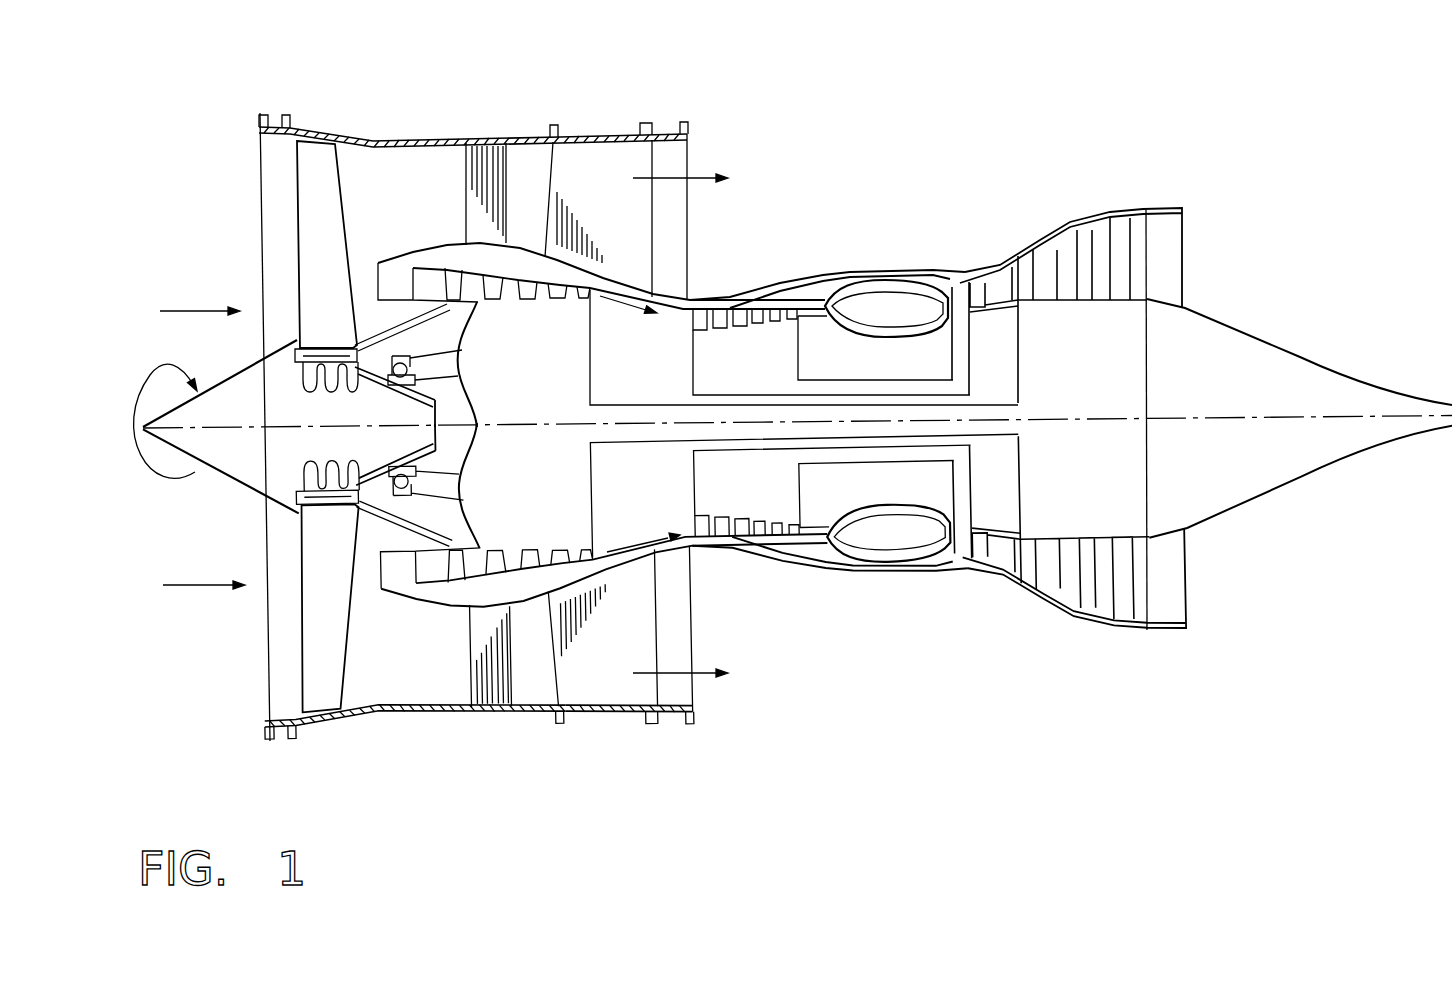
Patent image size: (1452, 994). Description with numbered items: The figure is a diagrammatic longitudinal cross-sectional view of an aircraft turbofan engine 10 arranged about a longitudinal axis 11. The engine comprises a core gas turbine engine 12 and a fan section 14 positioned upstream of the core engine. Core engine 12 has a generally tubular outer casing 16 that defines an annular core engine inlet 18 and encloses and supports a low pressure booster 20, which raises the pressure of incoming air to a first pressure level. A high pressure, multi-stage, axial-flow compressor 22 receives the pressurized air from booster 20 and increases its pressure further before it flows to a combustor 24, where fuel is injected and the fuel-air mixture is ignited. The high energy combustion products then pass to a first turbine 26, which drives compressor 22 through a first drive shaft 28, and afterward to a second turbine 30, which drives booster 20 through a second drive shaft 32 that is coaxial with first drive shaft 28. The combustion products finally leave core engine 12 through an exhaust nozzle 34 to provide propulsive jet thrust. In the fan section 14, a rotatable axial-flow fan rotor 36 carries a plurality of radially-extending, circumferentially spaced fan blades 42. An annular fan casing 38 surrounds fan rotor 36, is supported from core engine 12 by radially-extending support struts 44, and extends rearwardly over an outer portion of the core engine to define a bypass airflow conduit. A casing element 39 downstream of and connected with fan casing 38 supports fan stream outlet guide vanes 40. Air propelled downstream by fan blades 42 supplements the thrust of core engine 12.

The aircraft turbofan engine 10 is at (713, 84).
The longitudinal axis 11 is at (1197, 416).
The core gas turbine engine 12 is at (840, 242).
The fan section 14 is at (320, 100).
The outer casing 16 is at (786, 565).
The core engine inlet 18 is at (376, 577).
The low pressure booster 20 is at (563, 352).
The high pressure compressor 22 is at (713, 372).
The combustor 24 is at (897, 322).
The first turbine 26 is at (962, 285).
The first drive shaft 28 is at (818, 386).
The second turbine 30 is at (1120, 352).
The second drive shaft 32 is at (778, 437).
The exhaust nozzle 34 is at (1180, 247).
The fan rotor 36 is at (303, 378).
The fan casing 38 is at (400, 138).
The casing element 39 is at (593, 136).
The fan stream outlet guide vanes 40 is at (633, 218).
The fan blades 42 is at (347, 232).
The support struts 44 is at (476, 221).